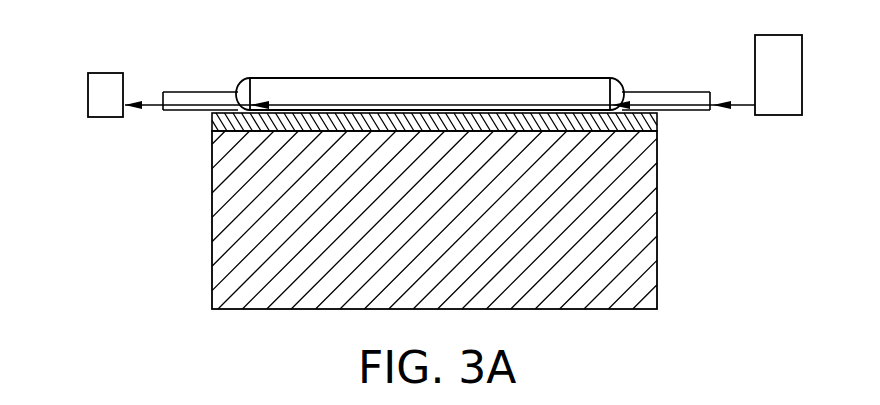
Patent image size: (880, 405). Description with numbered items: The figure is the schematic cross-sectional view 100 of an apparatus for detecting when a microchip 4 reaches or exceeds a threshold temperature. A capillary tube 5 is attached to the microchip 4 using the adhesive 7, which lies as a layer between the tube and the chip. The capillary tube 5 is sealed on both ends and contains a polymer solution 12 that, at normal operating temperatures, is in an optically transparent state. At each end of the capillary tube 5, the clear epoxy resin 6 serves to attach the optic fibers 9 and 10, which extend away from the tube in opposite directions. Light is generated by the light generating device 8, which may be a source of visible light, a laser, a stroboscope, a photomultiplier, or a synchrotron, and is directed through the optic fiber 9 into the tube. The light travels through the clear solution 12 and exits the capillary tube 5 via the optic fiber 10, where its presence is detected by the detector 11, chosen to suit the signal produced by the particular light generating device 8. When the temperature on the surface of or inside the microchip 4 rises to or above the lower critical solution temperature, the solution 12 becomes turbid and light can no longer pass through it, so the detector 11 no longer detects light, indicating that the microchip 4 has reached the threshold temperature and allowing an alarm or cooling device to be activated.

The microchip 4 is at (643, 260).
The capillary tube 5 is at (567, 85).
The clear epoxy resin 6 is at (242, 81).
The adhesive 7 is at (653, 120).
The light generating device 8 is at (790, 106).
The optic fiber 9 is at (708, 92).
The optic fiber 10 is at (163, 92).
The detector 11 is at (88, 97).
The polymer solution 12 is at (435, 92).
The cross-sectional view 100 is at (186, 274).